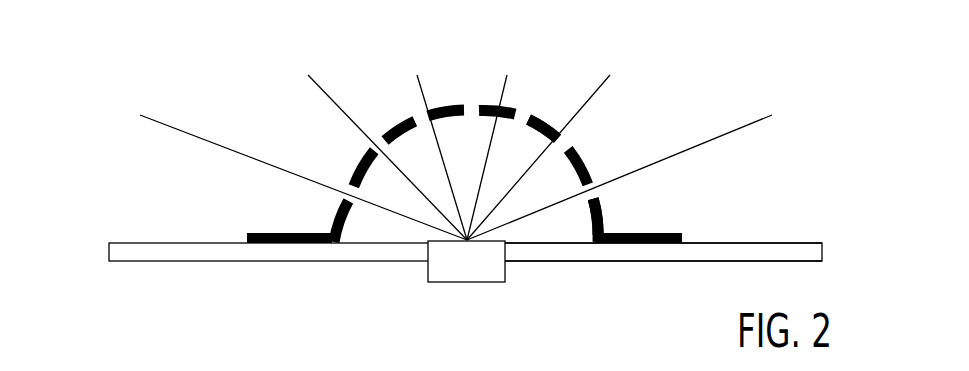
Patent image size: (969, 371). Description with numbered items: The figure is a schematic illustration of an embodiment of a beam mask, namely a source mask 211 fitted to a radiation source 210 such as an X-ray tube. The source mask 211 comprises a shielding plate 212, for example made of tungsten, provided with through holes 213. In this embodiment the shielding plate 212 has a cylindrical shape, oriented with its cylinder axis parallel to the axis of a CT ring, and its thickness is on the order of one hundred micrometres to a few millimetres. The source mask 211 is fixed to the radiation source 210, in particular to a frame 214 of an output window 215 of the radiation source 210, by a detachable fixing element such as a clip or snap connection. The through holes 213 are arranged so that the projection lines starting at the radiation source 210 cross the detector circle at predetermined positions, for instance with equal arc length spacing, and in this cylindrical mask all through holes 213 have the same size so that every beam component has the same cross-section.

The radiation source 210 is at (297, 306).
The source mask 211 is at (333, 168).
The shielding plate 212 is at (602, 210).
The through holes 213 is at (550, 140).
The frame 214 is at (573, 252).
The output window 215 is at (463, 273).